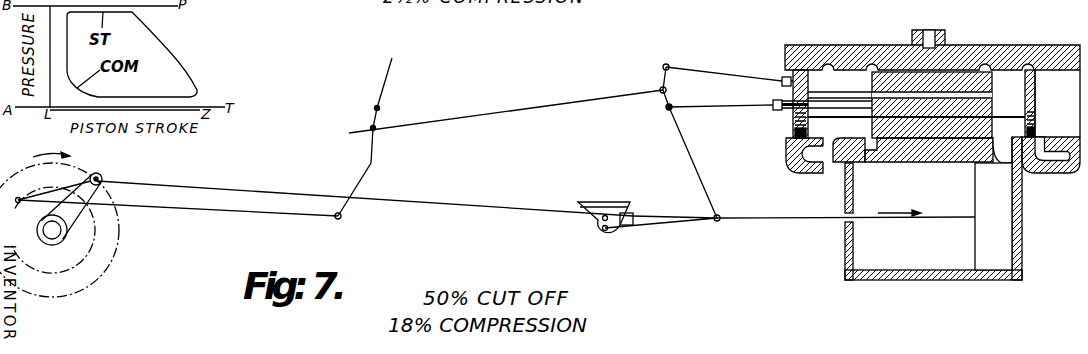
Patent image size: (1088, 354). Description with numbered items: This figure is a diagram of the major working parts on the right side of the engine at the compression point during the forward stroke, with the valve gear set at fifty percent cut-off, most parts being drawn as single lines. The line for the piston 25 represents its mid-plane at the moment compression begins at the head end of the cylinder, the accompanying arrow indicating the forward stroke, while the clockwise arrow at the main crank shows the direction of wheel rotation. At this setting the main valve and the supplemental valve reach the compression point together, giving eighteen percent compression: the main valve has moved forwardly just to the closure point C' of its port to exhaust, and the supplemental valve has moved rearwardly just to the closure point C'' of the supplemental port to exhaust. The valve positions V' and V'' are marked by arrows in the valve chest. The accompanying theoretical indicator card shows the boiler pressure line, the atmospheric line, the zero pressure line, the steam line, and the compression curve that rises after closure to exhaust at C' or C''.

The piston 25 is at (975, 250).
The valve V' is at (1017, 103).
The valve V'' is at (1057, 103).
The point of closure of the main valve port to exhaust C' is at (996, 165).
The point of closure of the supplemental port to exhaust C'' is at (1051, 169).